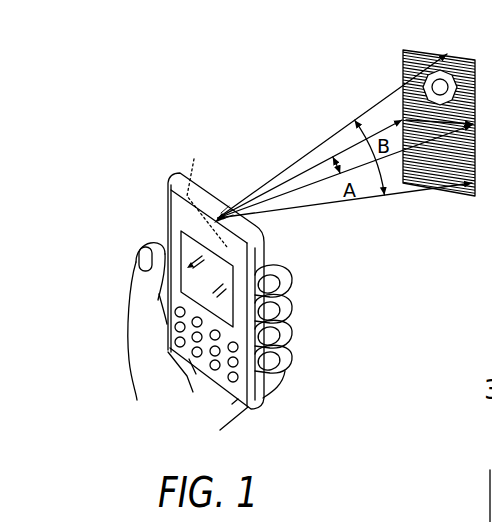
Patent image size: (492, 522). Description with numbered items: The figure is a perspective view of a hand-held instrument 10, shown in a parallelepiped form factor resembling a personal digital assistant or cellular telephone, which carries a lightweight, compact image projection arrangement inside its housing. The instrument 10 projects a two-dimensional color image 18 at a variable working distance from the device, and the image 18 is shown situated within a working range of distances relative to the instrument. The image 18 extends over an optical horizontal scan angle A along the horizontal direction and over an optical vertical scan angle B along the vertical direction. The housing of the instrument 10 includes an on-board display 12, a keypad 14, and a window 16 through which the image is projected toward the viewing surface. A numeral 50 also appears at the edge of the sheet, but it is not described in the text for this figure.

The mobile communication device 10 is at (165, 176).
The housing 12 is at (168, 203).
The keypad 14 is at (189, 359).
The image capture sensor 16 is at (199, 192).
The billboard advertisement 18 is at (398, 46).
The element of adjacent figure 50 is at (490, 470).